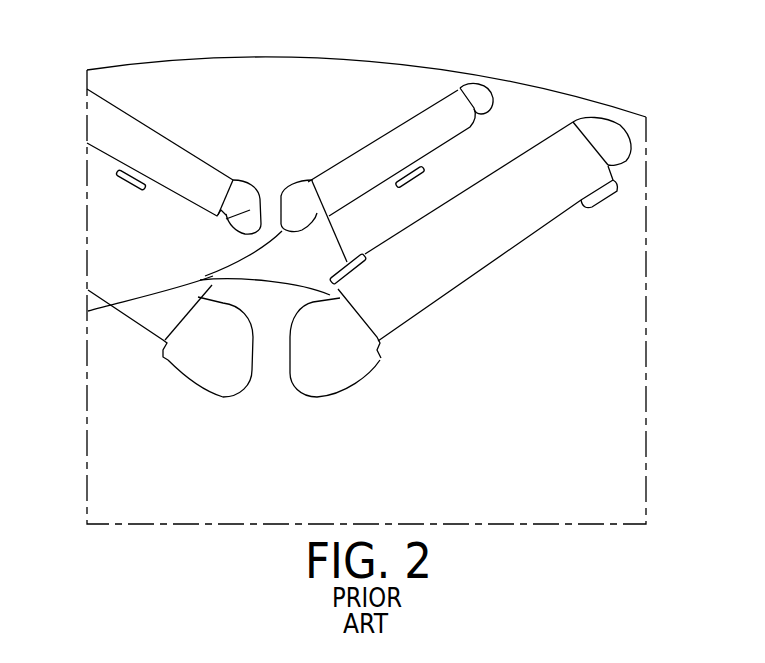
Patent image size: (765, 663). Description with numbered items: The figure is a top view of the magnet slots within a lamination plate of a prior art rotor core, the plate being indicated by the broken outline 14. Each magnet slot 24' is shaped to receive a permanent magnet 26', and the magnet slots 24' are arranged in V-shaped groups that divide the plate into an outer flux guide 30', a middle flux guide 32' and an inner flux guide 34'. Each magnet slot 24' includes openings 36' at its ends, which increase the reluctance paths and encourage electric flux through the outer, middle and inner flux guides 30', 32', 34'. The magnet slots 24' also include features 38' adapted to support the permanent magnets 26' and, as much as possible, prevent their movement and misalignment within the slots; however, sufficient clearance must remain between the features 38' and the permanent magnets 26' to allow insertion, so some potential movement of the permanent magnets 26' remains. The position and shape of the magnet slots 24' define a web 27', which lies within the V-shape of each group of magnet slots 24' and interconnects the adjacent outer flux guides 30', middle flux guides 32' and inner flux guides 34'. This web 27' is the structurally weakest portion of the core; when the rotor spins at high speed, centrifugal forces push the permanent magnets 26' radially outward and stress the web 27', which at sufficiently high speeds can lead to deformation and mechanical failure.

The stator core 14 is at (249, 50).
The magnet slot 24' is at (360, 218).
The permanent magnet 26' is at (293, 184).
The web 27' is at (270, 269).
The outer flux guide 30' is at (271, 117).
The middle flux guide 32' is at (271, 212).
The inner flux guide 34' is at (270, 357).
The opening 36' is at (373, 236).
The feature 38' is at (373, 197).